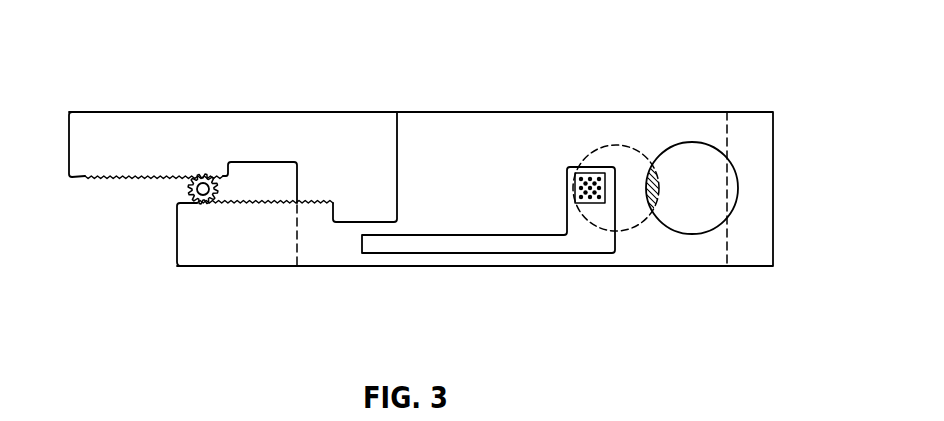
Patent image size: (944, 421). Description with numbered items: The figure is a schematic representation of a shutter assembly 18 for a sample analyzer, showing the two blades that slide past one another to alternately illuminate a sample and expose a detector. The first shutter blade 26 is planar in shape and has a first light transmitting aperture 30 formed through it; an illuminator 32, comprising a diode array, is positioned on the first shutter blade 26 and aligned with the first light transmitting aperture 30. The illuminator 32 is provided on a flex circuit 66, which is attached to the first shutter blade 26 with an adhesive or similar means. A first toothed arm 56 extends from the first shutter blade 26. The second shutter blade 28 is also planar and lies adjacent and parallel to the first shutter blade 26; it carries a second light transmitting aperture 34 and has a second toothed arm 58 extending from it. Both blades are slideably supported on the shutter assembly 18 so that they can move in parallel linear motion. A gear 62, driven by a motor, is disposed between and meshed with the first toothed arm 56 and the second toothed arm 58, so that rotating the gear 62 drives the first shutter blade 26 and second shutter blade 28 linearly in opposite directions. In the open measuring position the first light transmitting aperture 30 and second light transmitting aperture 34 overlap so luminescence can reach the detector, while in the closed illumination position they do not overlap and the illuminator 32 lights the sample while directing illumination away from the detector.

The shutter assembly 18 is at (131, 62).
The first shutter blade 26 is at (773, 228).
The second shutter blade 28 is at (327, 112).
The first light transmitting aperture 30 is at (717, 180).
The illuminator 32 is at (590, 171).
The second light transmitting aperture 34 is at (633, 203).
The first toothed arm 56 is at (252, 266).
The second toothed arm 58 is at (127, 112).
The gear 62 is at (188, 188).
The flex circuit 66 is at (488, 243).